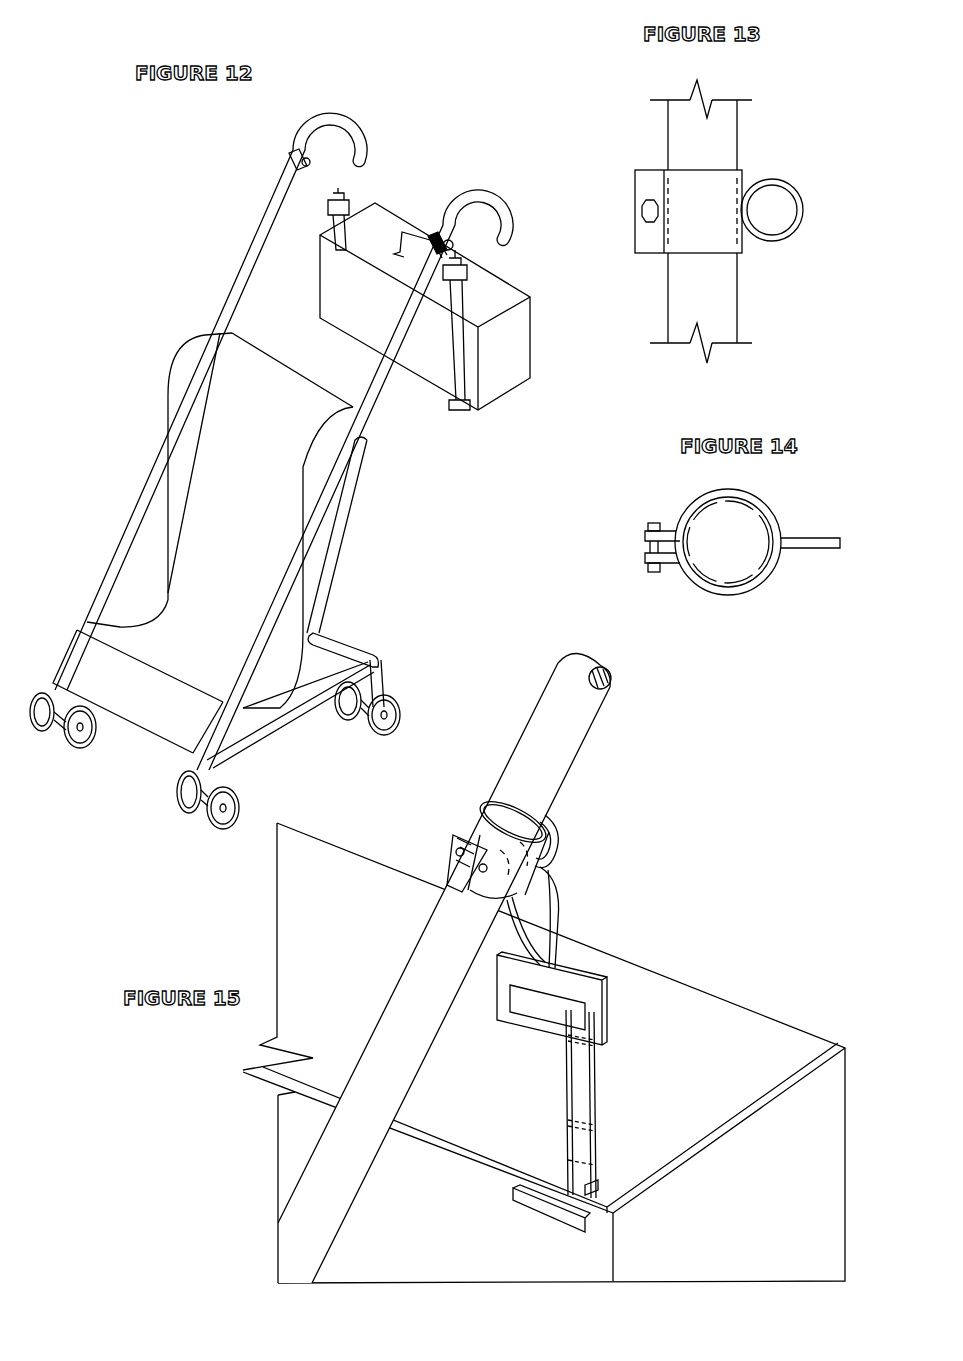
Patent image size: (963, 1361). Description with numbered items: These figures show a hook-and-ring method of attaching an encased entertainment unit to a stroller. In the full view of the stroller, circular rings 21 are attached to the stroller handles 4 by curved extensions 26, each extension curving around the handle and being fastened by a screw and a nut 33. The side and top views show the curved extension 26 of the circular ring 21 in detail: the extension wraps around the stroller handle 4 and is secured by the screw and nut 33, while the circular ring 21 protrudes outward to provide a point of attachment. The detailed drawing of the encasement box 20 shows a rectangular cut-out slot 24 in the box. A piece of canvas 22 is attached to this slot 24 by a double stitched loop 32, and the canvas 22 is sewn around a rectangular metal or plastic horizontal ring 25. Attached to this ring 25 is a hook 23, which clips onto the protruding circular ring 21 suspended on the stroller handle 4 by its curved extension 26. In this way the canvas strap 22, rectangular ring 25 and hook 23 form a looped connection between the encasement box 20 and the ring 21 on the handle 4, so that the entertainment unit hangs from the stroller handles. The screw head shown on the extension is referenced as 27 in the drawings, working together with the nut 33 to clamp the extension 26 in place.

In FIG. 12, the stroller handle 4 is at (300, 137).
In FIG. 15, the stroller handle 4 is at (373, 1038).
In FIG. 12, the encasement box 20 is at (527, 375).
In FIG. 15, the encasement box 20 is at (678, 1180).
In FIG. 12, the circular ring 21 is at (453, 245).
In FIG. 13, the circular ring 21 is at (786, 236).
In FIG. 14, the circular ring 21 is at (822, 550).
In FIG. 15, the circular ring 21 is at (557, 823).
In FIG. 12, the piece of canvas 22 is at (466, 300).
In FIG. 15, the piece of canvas 22 is at (584, 1095).
In FIG. 12, the hook 23 is at (444, 258).
In FIG. 15, the hook 23 is at (562, 890).
In FIG. 12, the rectangular cut-out slot 24 is at (462, 411).
In FIG. 15, the rectangular cut-out slot 24 is at (520, 1213).
In FIG. 12, the rectangular ring 25 is at (462, 280).
In FIG. 15, the rectangular ring 25 is at (615, 1012).
In FIG. 12, the curved extension 26 is at (447, 238).
In FIG. 13, the curved extension 26 is at (705, 176).
In FIG. 14, the curved extension 26 is at (695, 563).
In FIG. 15, the curved extension 26 is at (445, 833).
In FIG. 13, the clamp bolt 27 is at (649, 205).
In FIG. 14, the clamp bolt 27 is at (651, 522).
In FIG. 15, the clamp bolt 27 is at (458, 851).
In FIG. 15, the double stitched loop 32 is at (590, 1187).
In FIG. 14, the nut 33 is at (651, 574).
In FIG. 15, the nut 33 is at (480, 868).